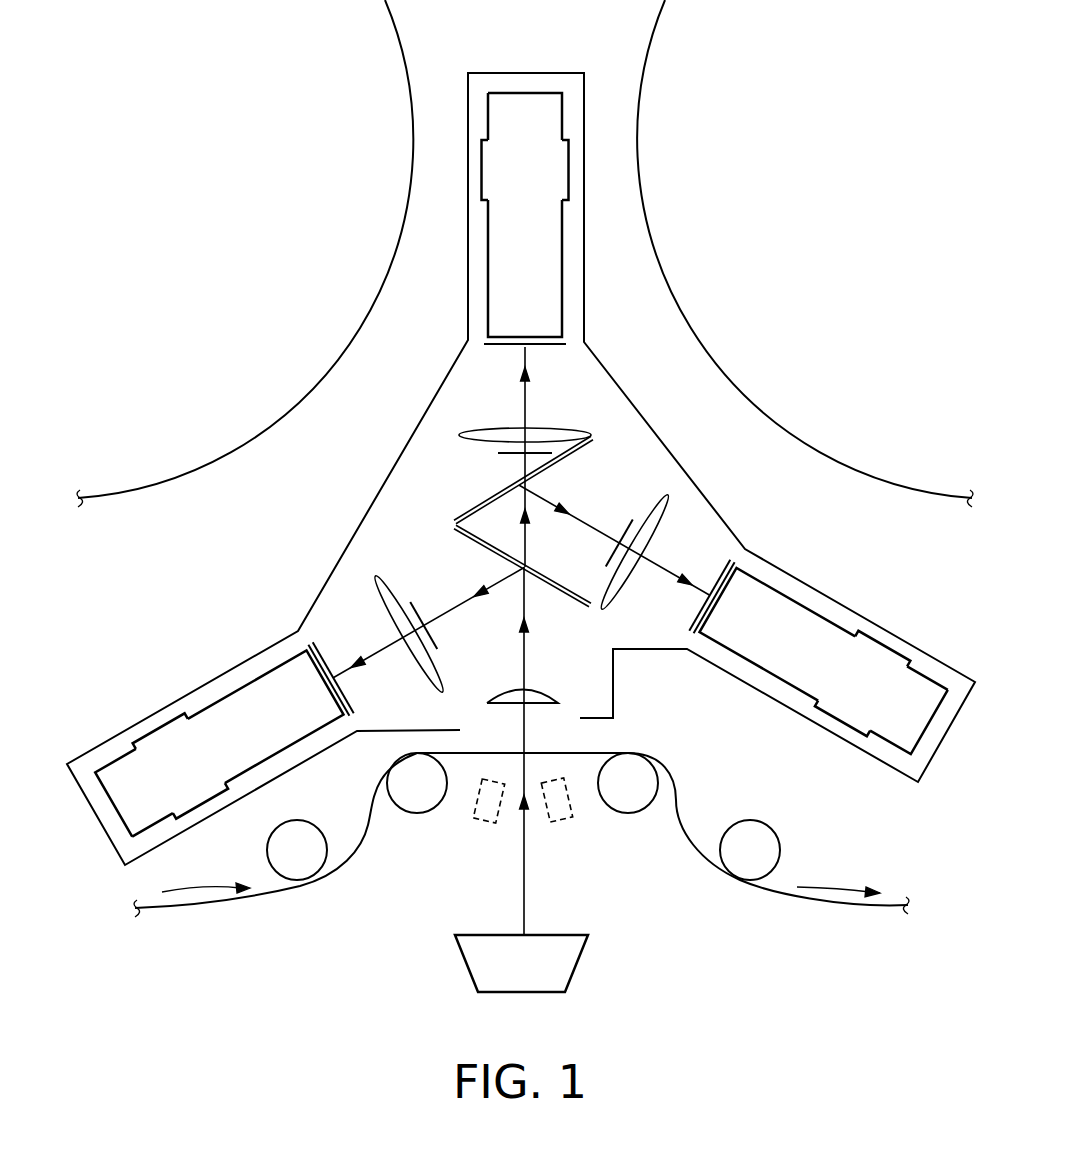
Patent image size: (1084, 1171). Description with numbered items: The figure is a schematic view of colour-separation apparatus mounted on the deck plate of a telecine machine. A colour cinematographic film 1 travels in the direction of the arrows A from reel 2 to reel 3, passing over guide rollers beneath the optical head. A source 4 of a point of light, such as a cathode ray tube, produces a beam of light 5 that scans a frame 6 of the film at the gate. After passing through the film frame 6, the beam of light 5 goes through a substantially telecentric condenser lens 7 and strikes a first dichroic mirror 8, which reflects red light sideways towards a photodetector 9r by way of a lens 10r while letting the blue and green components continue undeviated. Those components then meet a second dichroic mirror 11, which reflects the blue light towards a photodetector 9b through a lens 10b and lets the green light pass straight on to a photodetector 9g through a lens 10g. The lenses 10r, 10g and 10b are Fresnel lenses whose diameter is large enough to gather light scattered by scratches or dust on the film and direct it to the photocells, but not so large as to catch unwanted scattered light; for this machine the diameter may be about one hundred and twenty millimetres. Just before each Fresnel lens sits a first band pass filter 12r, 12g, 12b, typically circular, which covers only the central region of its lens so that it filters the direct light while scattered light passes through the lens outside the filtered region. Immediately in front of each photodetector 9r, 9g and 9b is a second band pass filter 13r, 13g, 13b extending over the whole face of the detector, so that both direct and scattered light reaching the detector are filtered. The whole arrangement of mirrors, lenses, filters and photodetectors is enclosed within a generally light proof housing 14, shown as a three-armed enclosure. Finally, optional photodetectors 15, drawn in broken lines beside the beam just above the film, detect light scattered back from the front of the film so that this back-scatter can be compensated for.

The colour cinematographic film 1 is at (263, 897).
The reel 2 is at (311, 126).
The reel 3 is at (721, 126).
The source of a point of light 4 is at (578, 971).
The beam of light 5 is at (522, 885).
The frame 6 is at (550, 733).
The telecentric condenser lens 7 is at (497, 690).
The first dichroic mirror 8 is at (578, 605).
The photodetector 9r is at (167, 725).
The photodetector 9g is at (488, 256).
The photodetector 9b is at (878, 641).
The lens 10r is at (392, 623).
The lens 10g is at (492, 428).
The lens 10b is at (655, 516).
The second dichroic mirror 11 is at (462, 512).
The first band pass filter 12r is at (418, 605).
The first band pass filter 12g is at (500, 458).
The first band pass filter 12b is at (615, 548).
The second band pass filter 13r is at (356, 692).
The second band pass filter 13g is at (548, 352).
The second band pass filter 13b is at (716, 576).
The light proof housing 14 is at (641, 432).
The optional photodetectors 15 is at (478, 820).